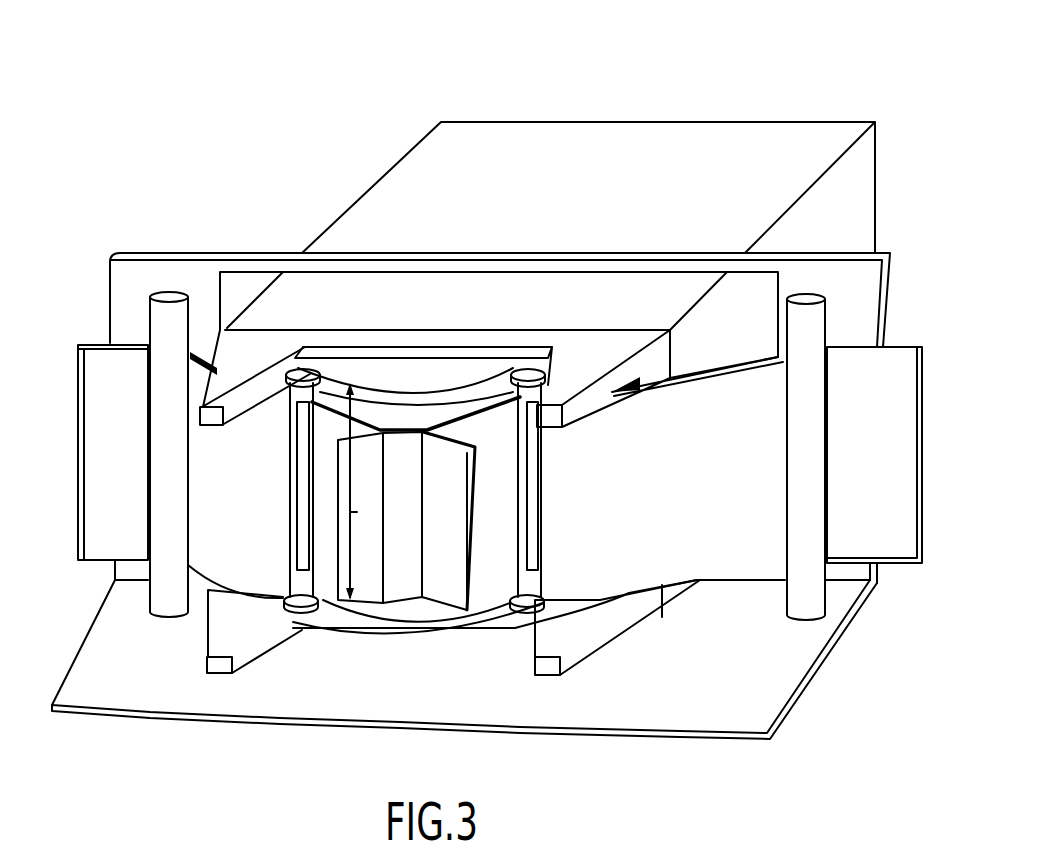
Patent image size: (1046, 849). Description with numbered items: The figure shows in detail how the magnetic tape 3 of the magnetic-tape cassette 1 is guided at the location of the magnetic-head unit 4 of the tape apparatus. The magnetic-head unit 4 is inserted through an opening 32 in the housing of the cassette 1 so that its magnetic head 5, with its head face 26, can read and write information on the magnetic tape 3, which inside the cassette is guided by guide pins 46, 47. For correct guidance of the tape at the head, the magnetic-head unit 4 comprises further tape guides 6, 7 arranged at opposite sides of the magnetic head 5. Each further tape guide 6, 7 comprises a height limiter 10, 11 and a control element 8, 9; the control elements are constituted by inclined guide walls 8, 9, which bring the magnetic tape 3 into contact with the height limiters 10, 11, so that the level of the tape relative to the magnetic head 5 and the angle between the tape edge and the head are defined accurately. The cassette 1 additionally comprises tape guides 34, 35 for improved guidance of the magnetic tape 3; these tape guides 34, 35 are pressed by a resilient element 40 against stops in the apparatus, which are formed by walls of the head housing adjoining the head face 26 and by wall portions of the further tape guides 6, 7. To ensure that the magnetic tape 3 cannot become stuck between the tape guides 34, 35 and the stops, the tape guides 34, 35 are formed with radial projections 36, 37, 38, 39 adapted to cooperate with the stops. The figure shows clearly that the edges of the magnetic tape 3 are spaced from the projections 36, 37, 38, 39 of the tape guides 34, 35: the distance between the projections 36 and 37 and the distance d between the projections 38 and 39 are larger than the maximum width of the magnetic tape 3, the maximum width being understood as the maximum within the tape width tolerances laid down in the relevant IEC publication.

The magnetic-tape cassette 1 is at (836, 651).
The magnetic tape 3 is at (887, 388).
The magnetic-head unit 4 is at (816, 121).
The magnetic head 5 is at (427, 363).
The further tape guide 6 is at (645, 628).
The further tape guide 7 is at (206, 634).
The control element (inclined guide wall) 8 is at (590, 642).
The control element (inclined guide wall) 9 is at (258, 647).
The height limiter 10 is at (580, 405).
The height limiter 11 is at (247, 400).
The head face 26 is at (387, 393).
The opening 32 is at (243, 283).
The tape guide 34 is at (538, 505).
The tape guide 35 is at (292, 505).
The radial projection 36 is at (540, 375).
The radial projection 37 is at (523, 615).
The radial projection 38 is at (298, 373).
The radial projection 39 is at (299, 614).
The resilient element 40 is at (407, 583).
The guide pin 46 is at (810, 330).
The guide pin 47 is at (163, 325).
The distance between projections d is at (358, 491).